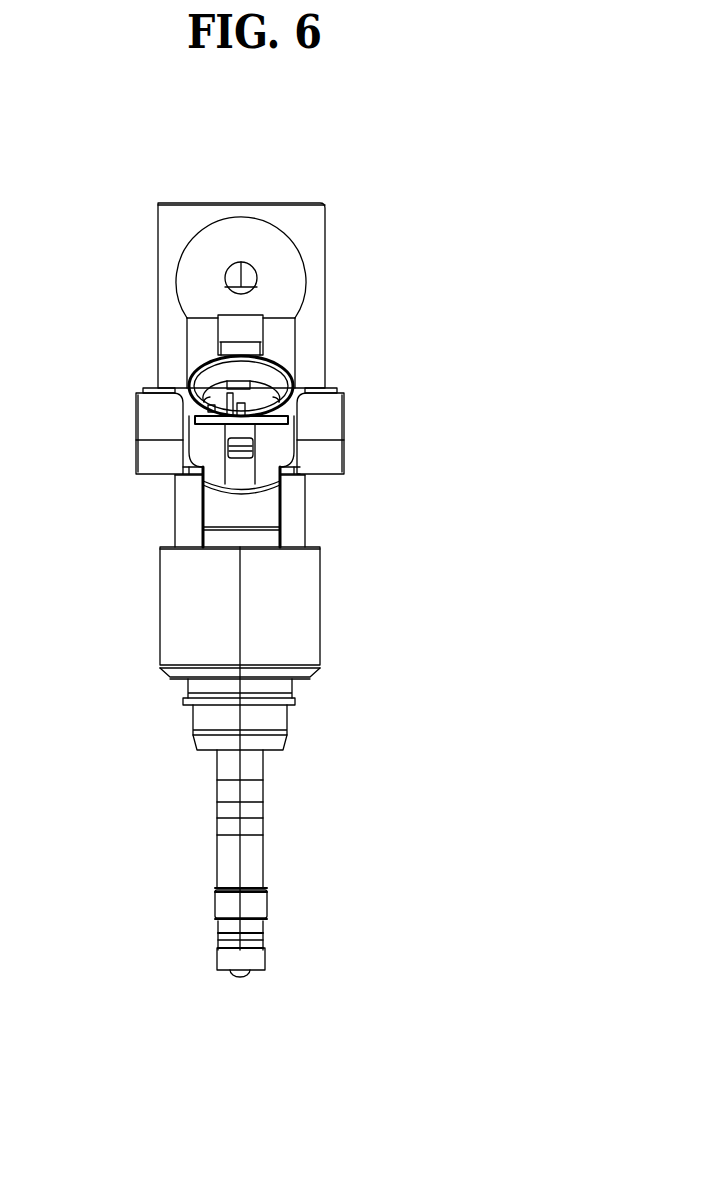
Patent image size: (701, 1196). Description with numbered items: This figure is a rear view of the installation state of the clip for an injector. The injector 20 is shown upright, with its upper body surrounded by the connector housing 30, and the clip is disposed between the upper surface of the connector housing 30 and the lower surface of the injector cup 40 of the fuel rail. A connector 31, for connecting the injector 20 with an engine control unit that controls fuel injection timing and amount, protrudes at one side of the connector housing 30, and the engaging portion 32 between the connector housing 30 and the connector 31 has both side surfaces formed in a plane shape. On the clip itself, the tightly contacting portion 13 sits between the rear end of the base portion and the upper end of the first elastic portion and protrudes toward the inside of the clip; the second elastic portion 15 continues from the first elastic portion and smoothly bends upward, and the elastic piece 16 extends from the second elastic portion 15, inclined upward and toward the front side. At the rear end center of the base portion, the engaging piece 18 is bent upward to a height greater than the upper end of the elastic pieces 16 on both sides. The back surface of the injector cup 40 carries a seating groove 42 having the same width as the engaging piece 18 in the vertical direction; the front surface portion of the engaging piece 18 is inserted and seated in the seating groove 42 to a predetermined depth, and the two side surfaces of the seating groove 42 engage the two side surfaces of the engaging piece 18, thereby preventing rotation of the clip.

The tightly contacting portion 13 is at (300, 445).
The second elastic portion 15 is at (328, 420).
The elastic piece 16 is at (337, 392).
The engaging piece 18 is at (250, 347).
The injector 20 is at (305, 613).
The connector housing 30 is at (298, 533).
The connector 31 is at (202, 449).
The engaging portion 32 is at (263, 508).
The injector cup 40 is at (317, 227).
The seating groove 42 is at (248, 325).